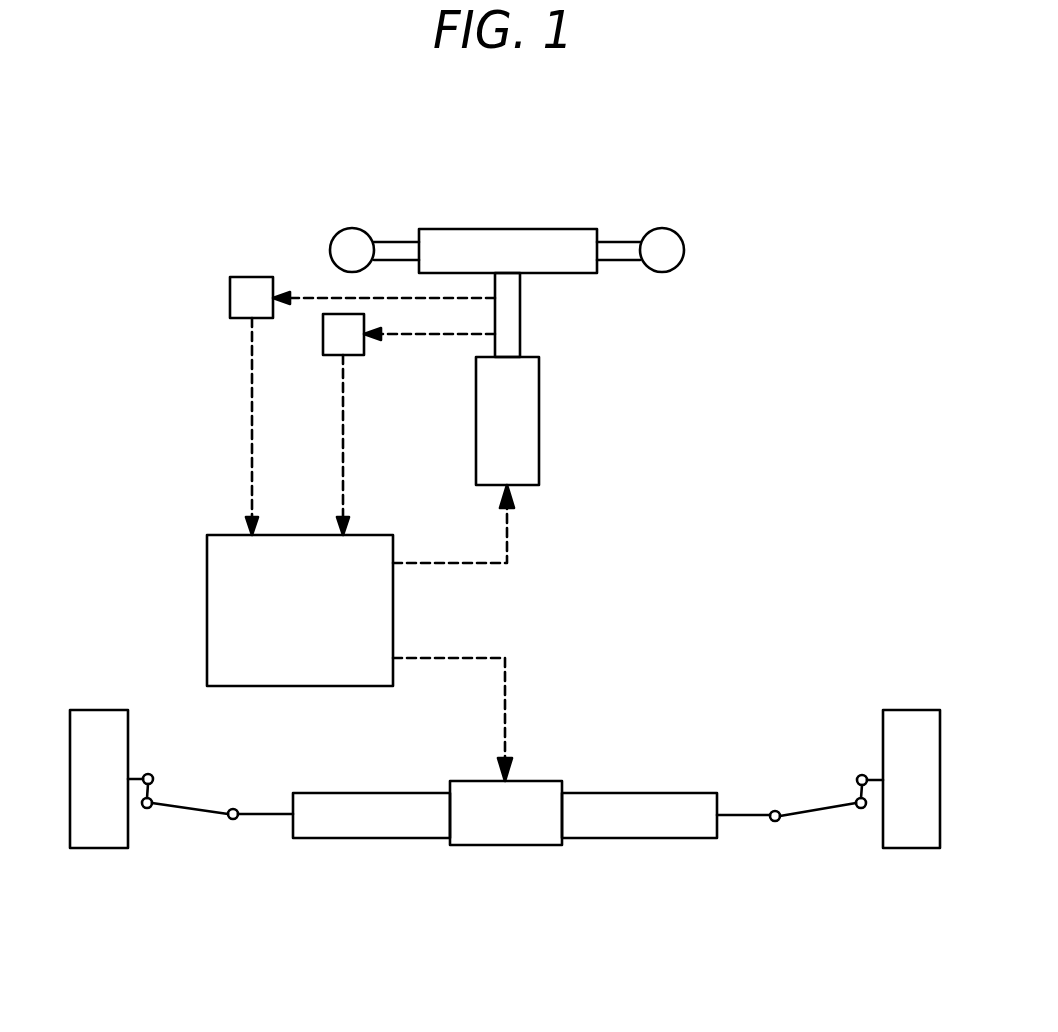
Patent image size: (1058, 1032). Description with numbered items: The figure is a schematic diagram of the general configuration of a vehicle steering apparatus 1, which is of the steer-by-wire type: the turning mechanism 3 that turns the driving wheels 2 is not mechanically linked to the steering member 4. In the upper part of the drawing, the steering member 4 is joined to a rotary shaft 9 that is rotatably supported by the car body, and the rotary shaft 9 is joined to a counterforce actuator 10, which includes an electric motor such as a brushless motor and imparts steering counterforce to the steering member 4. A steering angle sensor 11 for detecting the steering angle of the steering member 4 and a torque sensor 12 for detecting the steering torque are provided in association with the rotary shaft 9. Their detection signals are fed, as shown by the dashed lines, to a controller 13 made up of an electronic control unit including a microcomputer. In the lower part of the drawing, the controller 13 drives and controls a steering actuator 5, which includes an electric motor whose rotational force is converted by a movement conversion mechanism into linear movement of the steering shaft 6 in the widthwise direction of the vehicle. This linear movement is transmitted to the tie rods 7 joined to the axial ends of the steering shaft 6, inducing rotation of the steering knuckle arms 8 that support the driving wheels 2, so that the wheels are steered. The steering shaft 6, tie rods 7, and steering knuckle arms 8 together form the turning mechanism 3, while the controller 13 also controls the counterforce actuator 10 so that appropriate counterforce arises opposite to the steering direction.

The vehicle steering apparatus 1 is at (210, 198).
The driving wheels 2 is at (97, 835).
The turning mechanism 3 is at (622, 852).
The steering member 4 is at (586, 220).
The steering actuator 5 is at (503, 833).
The steering shaft 6 is at (265, 816).
The tie rods 7 is at (192, 808).
The steering knuckle arms 8 is at (152, 790).
The rotary shaft 9 is at (512, 316).
The counterforce actuator 10 is at (530, 408).
The steering angle sensor 11 is at (245, 292).
The torque sensor 12 is at (350, 342).
The controller 13 is at (215, 560).